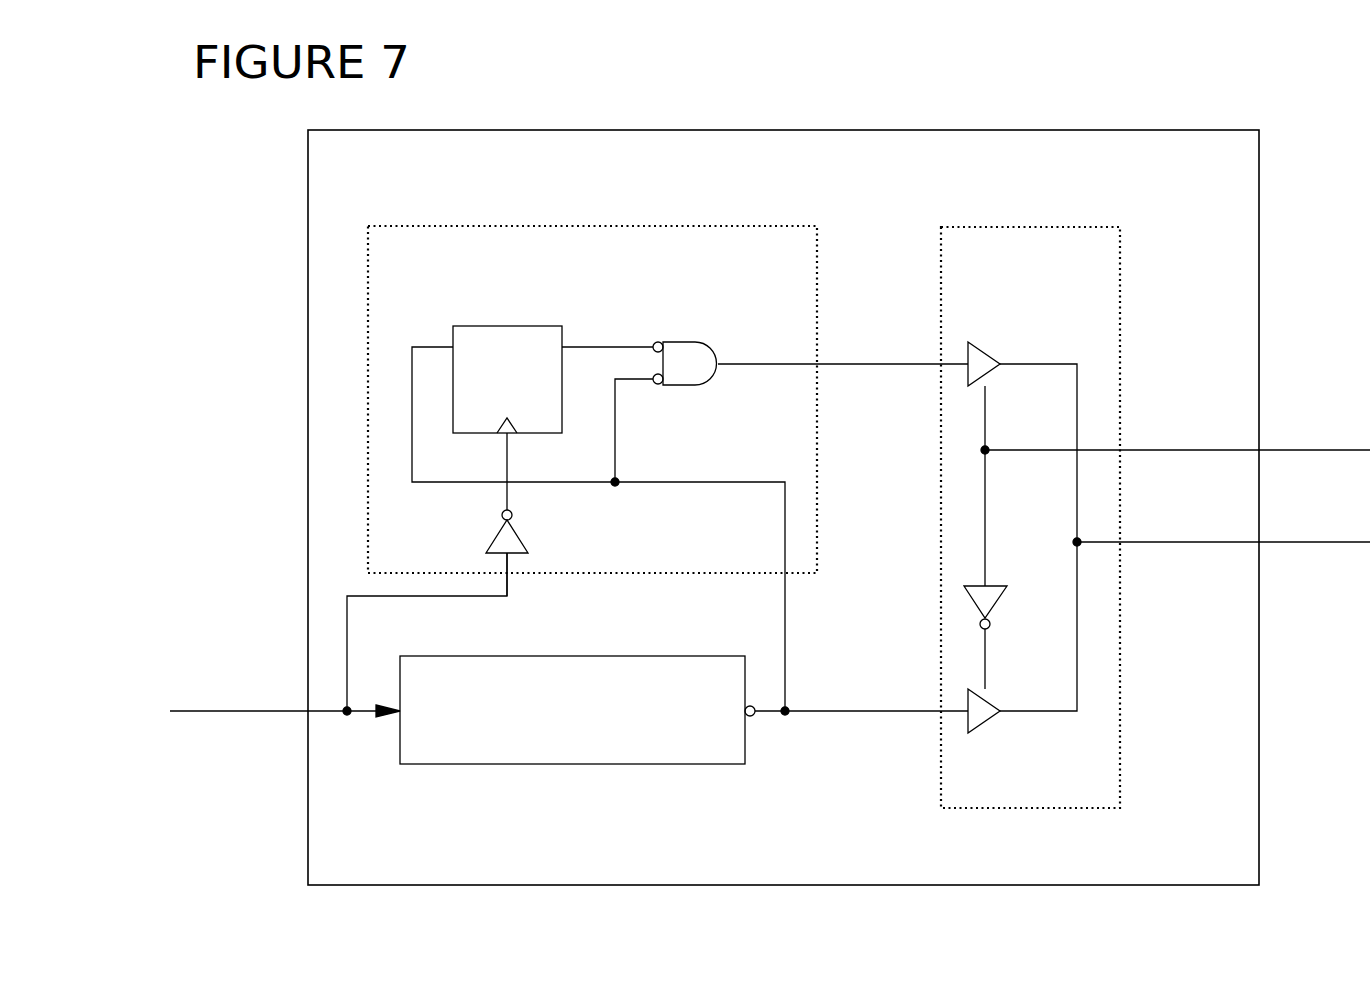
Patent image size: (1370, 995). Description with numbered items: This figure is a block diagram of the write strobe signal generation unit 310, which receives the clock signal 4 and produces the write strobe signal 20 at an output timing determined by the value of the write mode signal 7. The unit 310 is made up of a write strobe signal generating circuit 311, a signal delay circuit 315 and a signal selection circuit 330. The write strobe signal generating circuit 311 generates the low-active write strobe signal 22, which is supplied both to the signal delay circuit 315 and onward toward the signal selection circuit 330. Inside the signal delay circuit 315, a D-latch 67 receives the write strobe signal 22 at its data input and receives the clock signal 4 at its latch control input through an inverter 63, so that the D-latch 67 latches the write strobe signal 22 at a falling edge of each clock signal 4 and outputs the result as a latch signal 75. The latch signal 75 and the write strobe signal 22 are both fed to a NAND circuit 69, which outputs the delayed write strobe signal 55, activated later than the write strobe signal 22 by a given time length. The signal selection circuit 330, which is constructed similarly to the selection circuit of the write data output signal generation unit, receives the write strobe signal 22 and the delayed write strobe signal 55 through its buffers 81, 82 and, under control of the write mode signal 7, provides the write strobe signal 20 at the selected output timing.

The write strobe signal generation unit 310 is at (812, 128).
The signal delay circuit 315 is at (520, 226).
The signal selection circuit 330 is at (958, 226).
The write strobe signal generating circuit 311 is at (690, 655).
The D-latch 67 is at (503, 325).
The latch signal 75 is at (594, 345).
The NAND circuit 69 is at (690, 340).
The inverter 63 is at (521, 535).
The buffer 81 is at (985, 347).
The buffer 82 is at (985, 728).
The write strobe signal 55 is at (860, 366).
The write strobe signal 22 is at (867, 715).
The write mode signal 7 is at (1286, 448).
The write strobe signal 20 is at (1282, 545).
The clock signal 4 is at (208, 706).